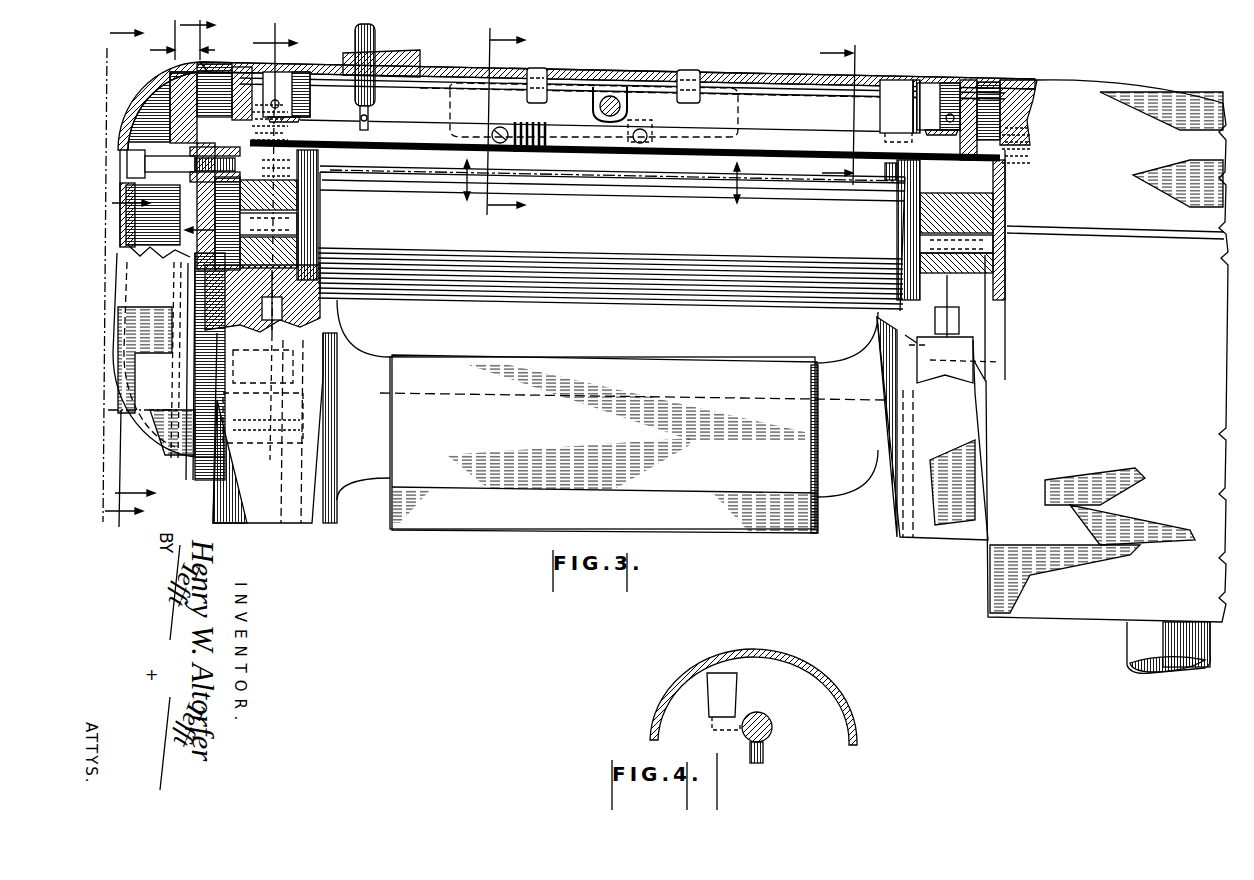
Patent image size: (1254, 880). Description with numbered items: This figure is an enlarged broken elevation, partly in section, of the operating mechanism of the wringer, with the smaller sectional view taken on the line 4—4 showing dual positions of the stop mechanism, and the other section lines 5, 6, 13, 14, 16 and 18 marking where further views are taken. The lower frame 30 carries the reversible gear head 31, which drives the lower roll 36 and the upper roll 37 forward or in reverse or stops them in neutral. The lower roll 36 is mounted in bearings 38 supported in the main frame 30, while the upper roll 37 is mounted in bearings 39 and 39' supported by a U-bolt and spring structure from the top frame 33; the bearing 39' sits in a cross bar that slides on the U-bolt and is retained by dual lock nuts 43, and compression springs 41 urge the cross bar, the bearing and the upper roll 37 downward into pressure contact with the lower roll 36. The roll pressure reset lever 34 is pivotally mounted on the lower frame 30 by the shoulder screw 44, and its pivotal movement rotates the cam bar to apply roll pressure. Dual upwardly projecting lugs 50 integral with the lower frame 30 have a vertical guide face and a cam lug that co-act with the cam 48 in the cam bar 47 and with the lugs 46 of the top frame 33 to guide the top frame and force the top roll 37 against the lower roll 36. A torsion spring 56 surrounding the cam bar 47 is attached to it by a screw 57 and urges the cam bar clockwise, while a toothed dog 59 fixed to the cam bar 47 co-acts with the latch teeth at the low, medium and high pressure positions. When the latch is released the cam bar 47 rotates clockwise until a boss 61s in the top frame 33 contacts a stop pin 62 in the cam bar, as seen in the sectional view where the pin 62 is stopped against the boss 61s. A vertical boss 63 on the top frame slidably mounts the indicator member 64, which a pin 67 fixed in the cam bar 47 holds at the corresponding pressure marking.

In FIG. 3, the section line 4- 4 is at (829, 114).
In FIG. 3, the section line 5- 5 is at (155, 113).
In FIG. 3, the section line 6- 6 is at (516, 121).
In FIG. 3, the section line 13- 13 is at (124, 282).
In FIG. 3, the section line 14- 14 is at (151, 228).
In FIG. 3, the section line 16- 16 is at (207, 259).
In FIG. 3, the section line 18- 18 is at (755, 173).
In FIG. 3, the lower frame 30 is at (490, 533).
In FIG. 3, the reversible gear head 31 is at (1081, 620).
In FIG. 3, the top frame 33 is at (915, 72).
In FIG. 4, the top frame 33 is at (793, 665).
In FIG. 3, the roll pressure reset lever 34 is at (170, 438).
In FIG. 3, the lower roll 36 is at (642, 340).
In FIG. 3, the upper roll 37 is at (682, 219).
In FIG. 3, the lower roll bearing 38 is at (611, 349).
In FIG. 3, the upper roll bearing 39 is at (924, 265).
In FIG. 3, the upper roll bearing 39' is at (289, 211).
In FIG. 3, the compression springs 41 is at (262, 166).
In FIG. 3, the dual lock nuts 43 is at (300, 308).
In FIG. 3, the shoulder screw 44 is at (128, 165).
In FIG. 3, the lugs 46 is at (611, 103).
In FIG. 3, the cam bar 47 is at (492, 130).
In FIG. 4, the cam bar 47 is at (773, 724).
In FIG. 3, the cam 48 is at (213, 125).
In FIG. 3, the upwardly projecting lugs 50 is at (200, 120).
In FIG. 3, the torsion spring 56 is at (540, 124).
In FIG. 3, the screw 57 is at (508, 130).
In FIG. 3, the toothed dog 59 is at (643, 130).
In FIG. 3, the boss 61s is at (880, 112).
In FIG. 4, the boss 61s is at (740, 688).
In FIG. 3, the stop pin 62 is at (890, 178).
In FIG. 4, the stop pin 62 is at (765, 750).
In FIG. 3, the vertical boss 63 is at (385, 52).
In FIG. 3, the indicator member 64 is at (355, 42).
In FIG. 3, the pin 67 is at (360, 118).